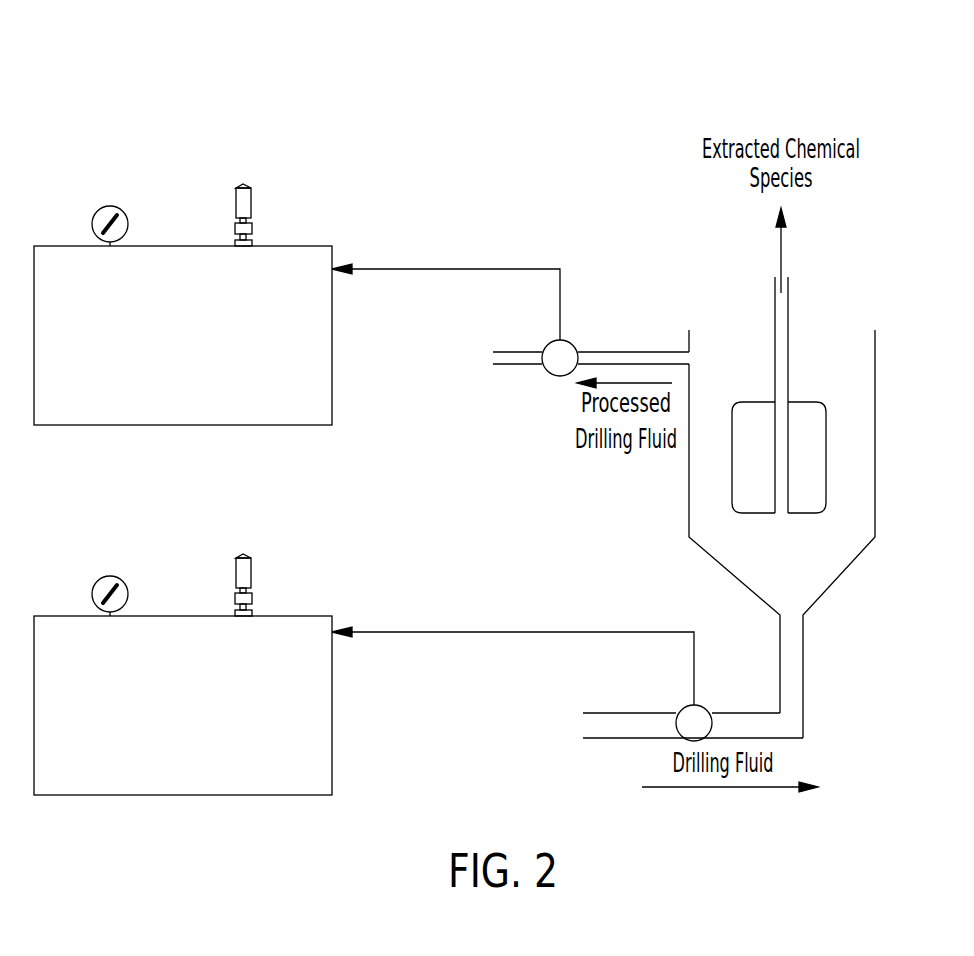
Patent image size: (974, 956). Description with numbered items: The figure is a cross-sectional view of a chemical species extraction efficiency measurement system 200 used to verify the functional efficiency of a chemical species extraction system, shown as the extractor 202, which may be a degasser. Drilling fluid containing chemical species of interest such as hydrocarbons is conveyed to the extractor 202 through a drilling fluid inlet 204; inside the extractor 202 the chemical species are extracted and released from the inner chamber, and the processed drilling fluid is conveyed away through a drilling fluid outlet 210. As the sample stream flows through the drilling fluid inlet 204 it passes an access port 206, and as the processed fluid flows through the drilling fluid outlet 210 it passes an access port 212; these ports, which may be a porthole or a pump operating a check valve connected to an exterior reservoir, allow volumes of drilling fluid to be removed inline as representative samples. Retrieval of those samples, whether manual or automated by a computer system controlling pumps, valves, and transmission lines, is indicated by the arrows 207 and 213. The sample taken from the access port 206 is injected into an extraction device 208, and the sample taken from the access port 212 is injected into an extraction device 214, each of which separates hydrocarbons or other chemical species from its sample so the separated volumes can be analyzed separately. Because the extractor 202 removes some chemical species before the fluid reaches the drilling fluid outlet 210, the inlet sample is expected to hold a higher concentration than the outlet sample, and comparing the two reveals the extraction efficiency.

The chemical species extraction efficiency measurement system 200 is at (396, 86).
The extractor 202 is at (876, 392).
The drilling fluid inlet 204 is at (608, 713).
The access port 206 is at (704, 706).
The arrow 207 is at (468, 631).
The extraction device 208 is at (153, 616).
The drilling fluid outlet 210 is at (618, 350).
The access port 212 is at (552, 376).
The arrow 213 is at (437, 268).
The extraction device 214 is at (52, 246).